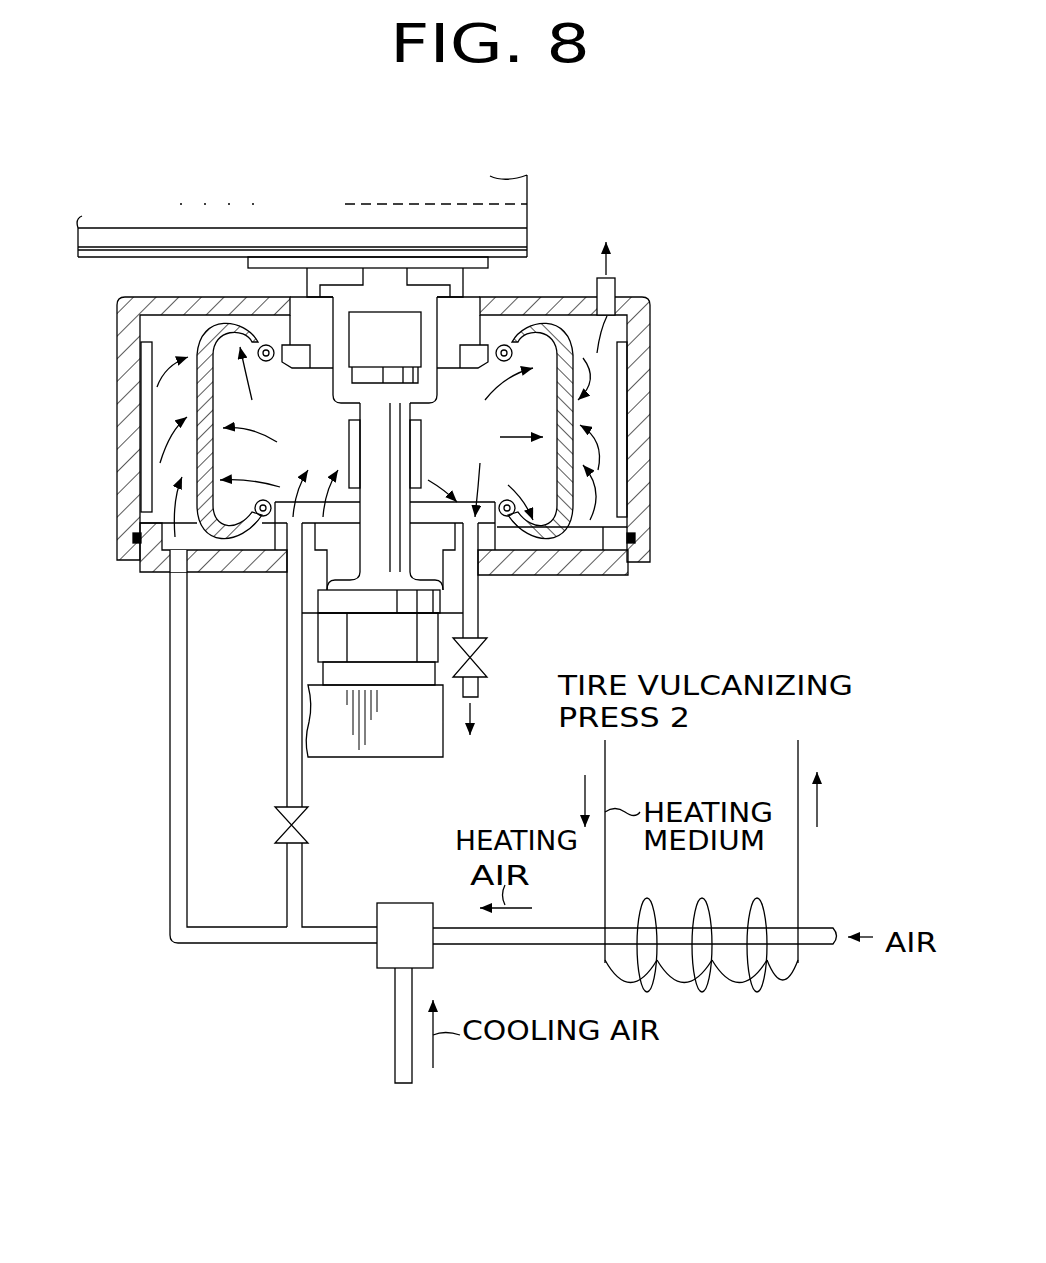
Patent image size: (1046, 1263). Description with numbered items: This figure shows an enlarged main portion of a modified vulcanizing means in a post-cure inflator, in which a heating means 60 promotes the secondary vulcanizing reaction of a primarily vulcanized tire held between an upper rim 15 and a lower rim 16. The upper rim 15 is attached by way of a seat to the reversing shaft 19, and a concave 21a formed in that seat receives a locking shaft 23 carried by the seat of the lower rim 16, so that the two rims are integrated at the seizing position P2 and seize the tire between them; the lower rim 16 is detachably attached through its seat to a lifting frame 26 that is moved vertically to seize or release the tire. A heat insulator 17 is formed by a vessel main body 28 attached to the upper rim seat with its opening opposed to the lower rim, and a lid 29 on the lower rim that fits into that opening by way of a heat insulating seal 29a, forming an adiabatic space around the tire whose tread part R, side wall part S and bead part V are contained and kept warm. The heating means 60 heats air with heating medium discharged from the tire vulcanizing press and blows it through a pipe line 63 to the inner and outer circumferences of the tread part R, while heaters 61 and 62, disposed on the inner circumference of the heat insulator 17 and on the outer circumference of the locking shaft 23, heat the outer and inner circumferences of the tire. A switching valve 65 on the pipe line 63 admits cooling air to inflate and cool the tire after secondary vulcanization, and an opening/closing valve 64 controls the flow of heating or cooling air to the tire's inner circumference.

The reversing shaft 19 is at (188, 238).
The tread part R is at (140, 412).
The heater 61 is at (145, 468).
The heating means 60 is at (155, 600).
The side wall part S is at (232, 538).
The bead part V is at (266, 518).
The concave 21a is at (353, 334).
The heater 62 is at (349, 425).
The locking shaft 23 is at (361, 450).
The upper rim 15 is at (492, 340).
The seizing position P2 is at (482, 454).
The heat insulator 17 is at (655, 388).
The vessel main body 28 is at (645, 480).
The heat insulating seal 29a is at (637, 540).
The lid 29 is at (624, 570).
The lower rim 16 is at (487, 527).
The opening/closing valve 64 is at (483, 645).
The lifting frame 26 is at (395, 752).
The switching valve 65 is at (390, 902).
The pipe line 63 is at (290, 937).